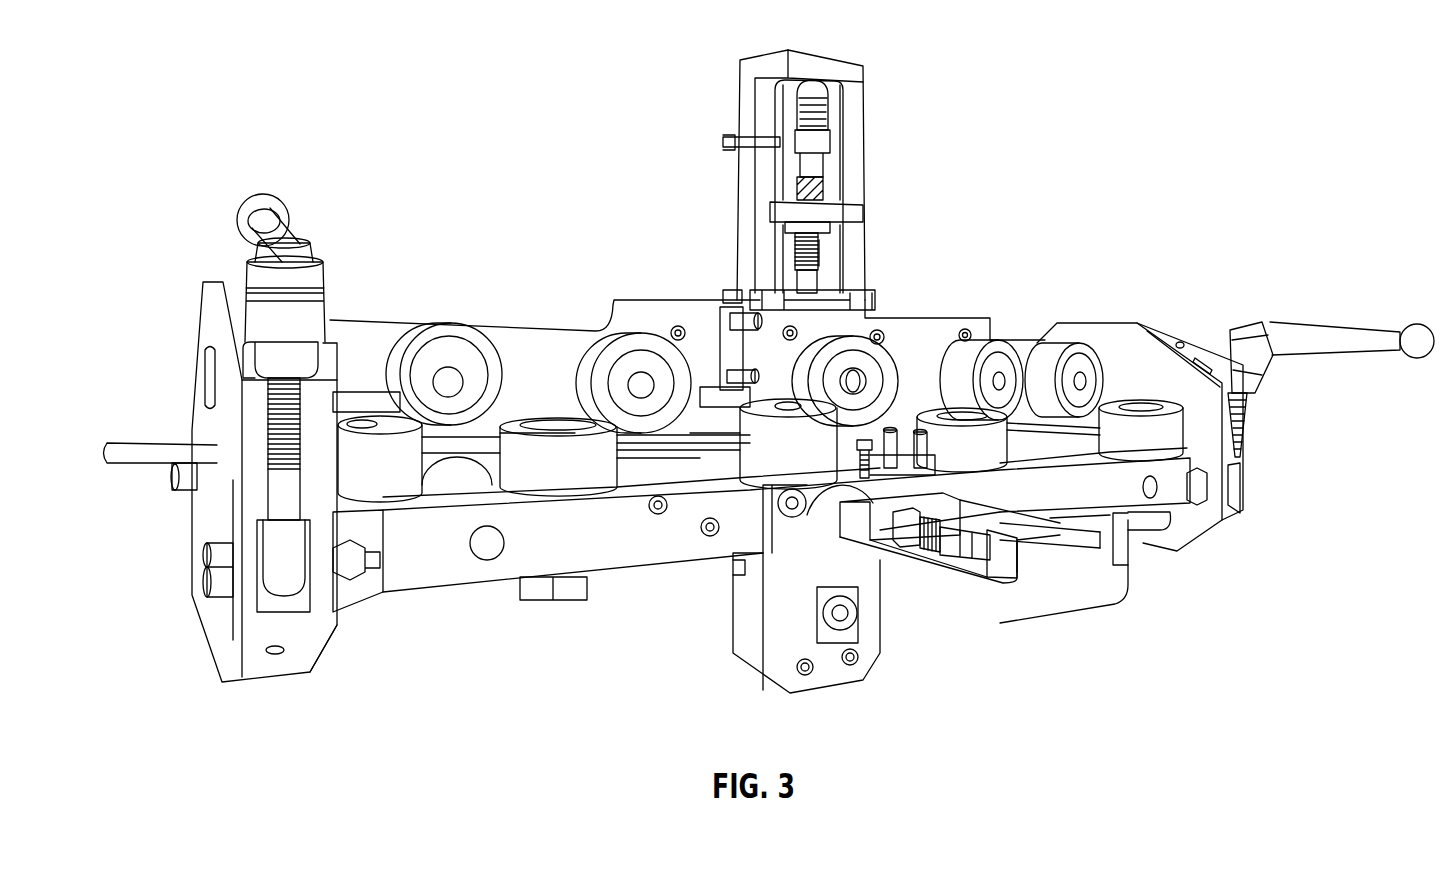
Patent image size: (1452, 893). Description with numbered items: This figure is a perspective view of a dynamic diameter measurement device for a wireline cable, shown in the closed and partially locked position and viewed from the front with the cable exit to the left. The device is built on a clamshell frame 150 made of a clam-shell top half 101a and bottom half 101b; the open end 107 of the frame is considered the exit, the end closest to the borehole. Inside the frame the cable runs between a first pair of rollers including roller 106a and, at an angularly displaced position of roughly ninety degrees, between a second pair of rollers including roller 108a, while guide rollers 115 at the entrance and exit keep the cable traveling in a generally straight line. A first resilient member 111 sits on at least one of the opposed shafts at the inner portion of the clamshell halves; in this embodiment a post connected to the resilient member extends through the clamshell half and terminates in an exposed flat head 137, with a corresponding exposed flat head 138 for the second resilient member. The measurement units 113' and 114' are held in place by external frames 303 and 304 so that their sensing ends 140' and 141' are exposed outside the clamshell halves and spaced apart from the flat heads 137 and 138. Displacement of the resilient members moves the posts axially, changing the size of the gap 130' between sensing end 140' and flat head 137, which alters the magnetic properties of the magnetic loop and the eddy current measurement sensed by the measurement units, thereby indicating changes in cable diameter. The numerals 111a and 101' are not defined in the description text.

The external frame 303 is at (767, 60).
The measurement unit 113' is at (865, 138).
The sensing end 140' is at (752, 240).
The gap 130' is at (880, 249).
The exposed flat head 137 is at (850, 298).
The first resilient member 111 is at (922, 365).
The bracket 111a is at (723, 305).
The end plate 101' is at (1235, 394).
The clam-shell top half 101a is at (350, 321).
The clam-shell bottom half 101b is at (443, 592).
The clamshell frame 150 is at (190, 388).
The open end 107 is at (215, 630).
The guide rollers 115 is at (463, 370).
The roller 106a is at (827, 461).
The roller 108a is at (750, 457).
The exposed flat head 138 is at (775, 540).
The sensing end 141' is at (776, 589).
The measurement unit 114' is at (950, 578).
The external frame 304 is at (1128, 590).